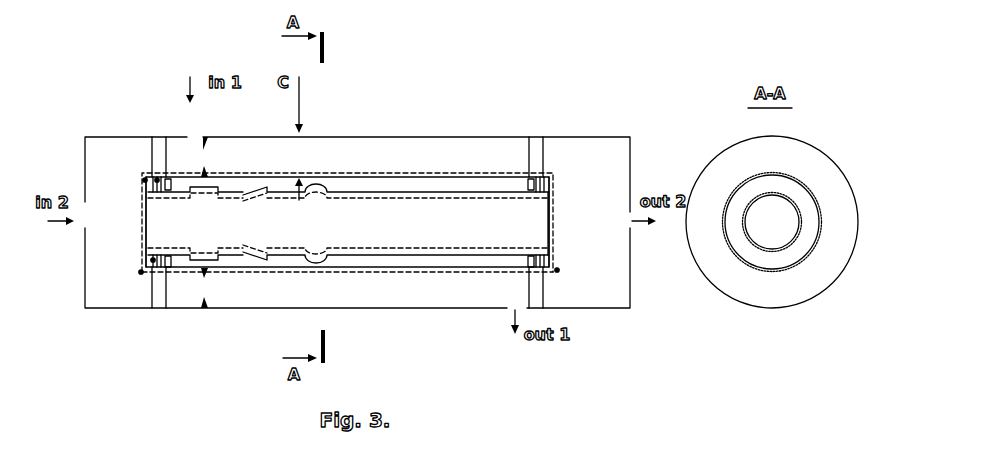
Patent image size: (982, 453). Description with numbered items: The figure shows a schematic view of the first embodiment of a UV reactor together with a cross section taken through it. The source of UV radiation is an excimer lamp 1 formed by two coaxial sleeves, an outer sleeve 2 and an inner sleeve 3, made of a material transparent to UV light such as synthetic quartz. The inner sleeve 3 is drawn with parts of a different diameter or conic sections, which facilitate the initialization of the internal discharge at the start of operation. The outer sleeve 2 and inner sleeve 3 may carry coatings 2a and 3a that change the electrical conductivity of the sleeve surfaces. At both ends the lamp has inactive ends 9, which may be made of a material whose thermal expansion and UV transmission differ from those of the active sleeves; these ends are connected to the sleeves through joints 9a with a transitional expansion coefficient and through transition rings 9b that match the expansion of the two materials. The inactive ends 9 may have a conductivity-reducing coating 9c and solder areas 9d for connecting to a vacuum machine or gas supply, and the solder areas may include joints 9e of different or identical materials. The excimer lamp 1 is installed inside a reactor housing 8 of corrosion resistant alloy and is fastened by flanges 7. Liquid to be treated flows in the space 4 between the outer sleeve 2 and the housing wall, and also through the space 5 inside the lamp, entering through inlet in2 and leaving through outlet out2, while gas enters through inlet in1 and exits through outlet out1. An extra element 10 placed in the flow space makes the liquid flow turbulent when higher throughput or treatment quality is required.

The excimer lamp 1 is at (377, 182).
The outer sleeve 2 is at (333, 173).
The coating 2a is at (425, 272).
The inner sleeve 3 is at (422, 192).
The coating 3a is at (357, 249).
The space 4 is at (295, 158).
The space 5 is at (447, 217).
The flanges 7 is at (158, 288).
The reactor housing 8 is at (523, 137).
The inactive ends 9 is at (145, 216).
The joints 9a is at (145, 180).
The transition rings 9b is at (170, 180).
The coating 9c is at (141, 247).
The solder areas 9d is at (163, 180).
The joints 9e is at (157, 180).
The extra element 10 is at (203, 272).